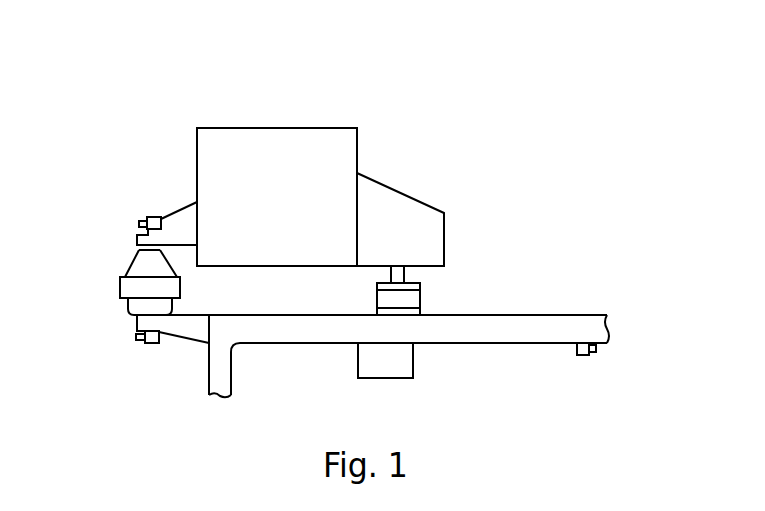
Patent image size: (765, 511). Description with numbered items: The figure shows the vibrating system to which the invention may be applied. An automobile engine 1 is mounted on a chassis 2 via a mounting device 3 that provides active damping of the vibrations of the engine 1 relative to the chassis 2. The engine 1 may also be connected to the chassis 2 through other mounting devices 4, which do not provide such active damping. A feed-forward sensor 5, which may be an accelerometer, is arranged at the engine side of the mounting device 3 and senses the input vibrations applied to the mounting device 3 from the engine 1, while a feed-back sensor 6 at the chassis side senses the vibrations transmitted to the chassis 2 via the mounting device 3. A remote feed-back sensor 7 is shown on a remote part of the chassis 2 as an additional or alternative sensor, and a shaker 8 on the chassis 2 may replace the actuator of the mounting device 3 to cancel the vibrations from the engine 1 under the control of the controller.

The automobile engine 1 is at (328, 137).
The chassis 2 is at (247, 332).
The mounting device 3 is at (130, 287).
The other mounting devices 4 is at (413, 302).
The feed-forward sensor 5 is at (153, 217).
The feed-back sensor 6 is at (148, 345).
The remote feed-back sensor 7 is at (593, 355).
The shaker 8 is at (392, 372).